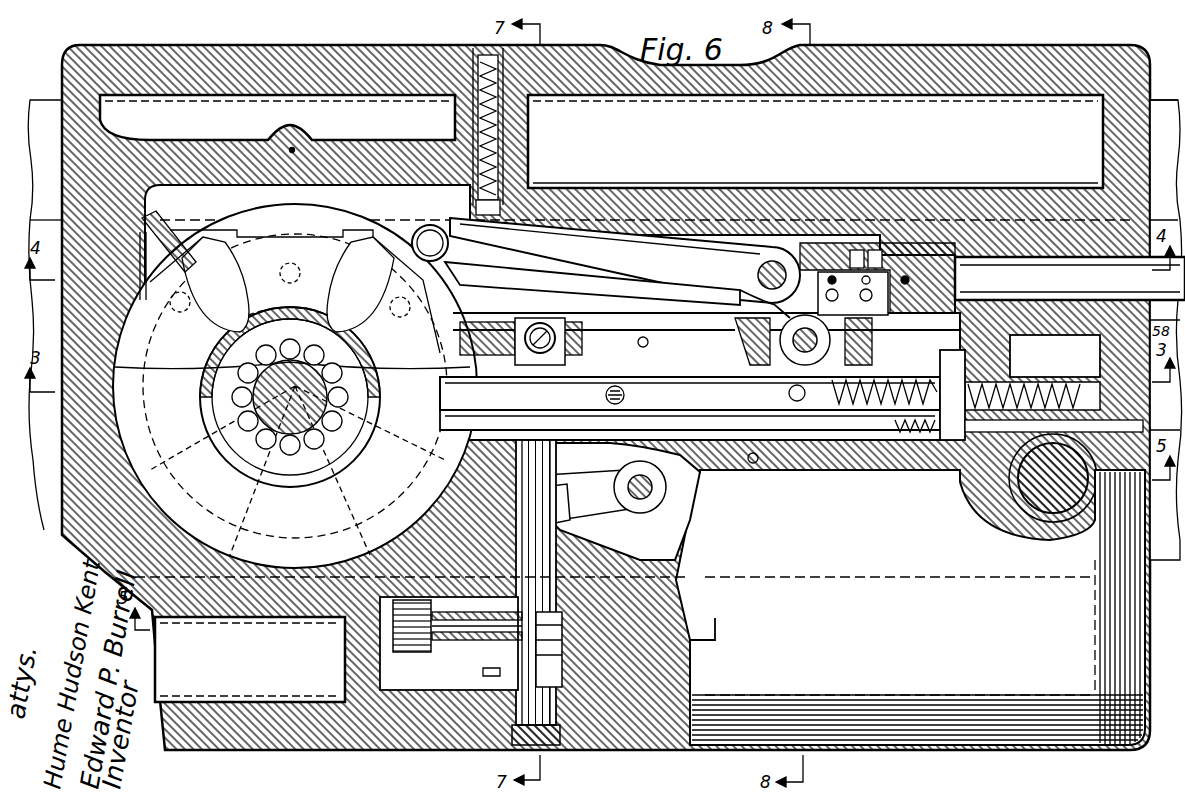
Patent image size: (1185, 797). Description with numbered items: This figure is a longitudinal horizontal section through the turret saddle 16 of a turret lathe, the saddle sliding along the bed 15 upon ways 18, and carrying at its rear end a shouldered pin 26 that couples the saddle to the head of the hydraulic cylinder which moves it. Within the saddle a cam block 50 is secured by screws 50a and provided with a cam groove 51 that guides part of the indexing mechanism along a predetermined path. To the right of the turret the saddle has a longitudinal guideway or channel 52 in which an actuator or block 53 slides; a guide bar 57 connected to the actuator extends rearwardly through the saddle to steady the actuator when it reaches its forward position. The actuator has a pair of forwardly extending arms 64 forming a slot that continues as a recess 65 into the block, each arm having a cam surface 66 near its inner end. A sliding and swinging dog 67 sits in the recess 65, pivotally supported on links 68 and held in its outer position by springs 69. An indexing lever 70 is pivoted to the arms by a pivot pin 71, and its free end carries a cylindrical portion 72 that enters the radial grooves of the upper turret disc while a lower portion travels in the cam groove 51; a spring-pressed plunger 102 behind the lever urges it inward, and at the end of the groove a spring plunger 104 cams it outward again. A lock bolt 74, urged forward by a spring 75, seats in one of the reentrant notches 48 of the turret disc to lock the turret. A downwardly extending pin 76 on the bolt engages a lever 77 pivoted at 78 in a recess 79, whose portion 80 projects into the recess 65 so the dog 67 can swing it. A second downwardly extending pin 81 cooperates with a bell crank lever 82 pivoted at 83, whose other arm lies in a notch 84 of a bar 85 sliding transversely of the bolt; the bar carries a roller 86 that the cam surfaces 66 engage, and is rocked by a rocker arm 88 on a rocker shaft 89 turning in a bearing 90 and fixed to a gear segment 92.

The bed 15 is at (1158, 690).
The turret saddle 16 is at (975, 58).
The ways 18 is at (45, 100).
The shouldered pin 26 is at (1030, 492).
The reentrant notches 48 is at (440, 390).
The cam block 50 is at (138, 262).
The screws 50a is at (182, 312).
The cam groove 51 is at (336, 285).
The guideway or channel 52 is at (648, 316).
The actuator or block 53 is at (925, 245).
The guide bar 57 is at (1070, 278).
The forwardly extending arms 64 is at (738, 247).
The recess 65 is at (826, 245).
The cam surface 66 is at (740, 304).
The sliding and swinging dog 67 is at (862, 320).
The links 68 is at (876, 250).
The springs 69 is at (858, 250).
The indexing lever 70 is at (560, 278).
The pivot pin 71 is at (757, 275).
The cylindrical portion 72 is at (420, 228).
The lock bolt 74 is at (684, 387).
The spring 75 is at (1052, 386).
The downwardly extending pin 76 is at (803, 402).
The lever 77 is at (760, 393).
The pivot 78 is at (812, 350).
The recess 79 is at (746, 340).
The portion 80 is at (820, 302).
The second downwardly extending pin 81 is at (607, 391).
The bell crank lever 82 is at (610, 472).
The pivot 83 is at (655, 497).
The notch 84 is at (537, 522).
The bar 85 is at (548, 482).
The roller 86 is at (537, 320).
The rocker arm 88 is at (545, 610).
The rocker shaft 89 is at (466, 650).
The bearing 90 is at (468, 618).
The gear segment 92 is at (430, 611).
The spring-pressed plunger 102 is at (500, 166).
The spring plunger 104 is at (160, 224).